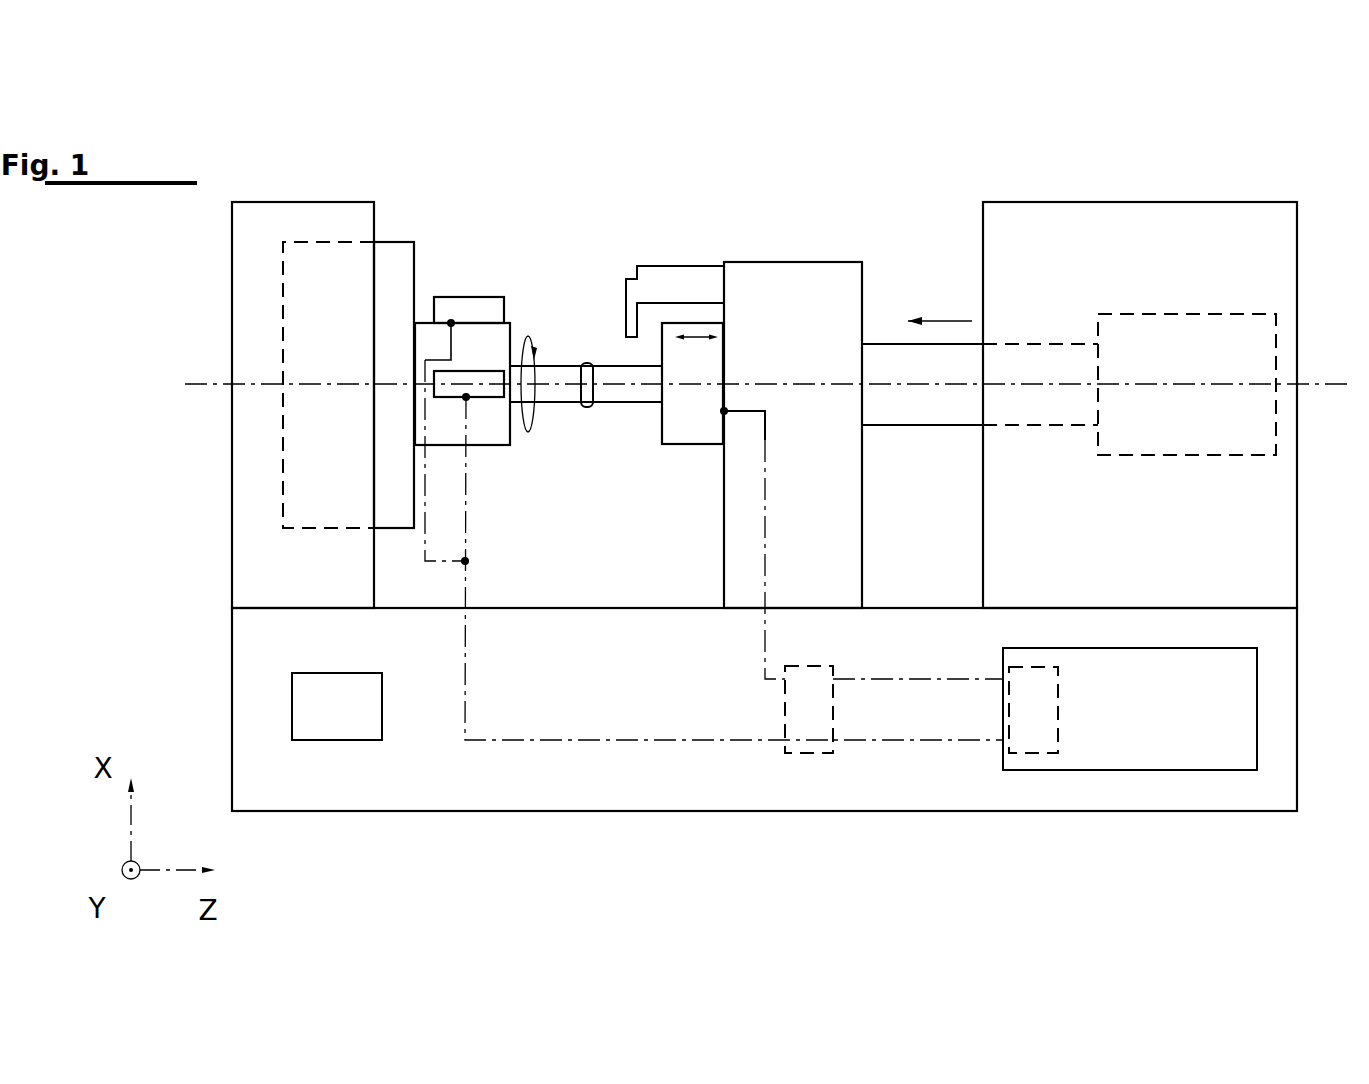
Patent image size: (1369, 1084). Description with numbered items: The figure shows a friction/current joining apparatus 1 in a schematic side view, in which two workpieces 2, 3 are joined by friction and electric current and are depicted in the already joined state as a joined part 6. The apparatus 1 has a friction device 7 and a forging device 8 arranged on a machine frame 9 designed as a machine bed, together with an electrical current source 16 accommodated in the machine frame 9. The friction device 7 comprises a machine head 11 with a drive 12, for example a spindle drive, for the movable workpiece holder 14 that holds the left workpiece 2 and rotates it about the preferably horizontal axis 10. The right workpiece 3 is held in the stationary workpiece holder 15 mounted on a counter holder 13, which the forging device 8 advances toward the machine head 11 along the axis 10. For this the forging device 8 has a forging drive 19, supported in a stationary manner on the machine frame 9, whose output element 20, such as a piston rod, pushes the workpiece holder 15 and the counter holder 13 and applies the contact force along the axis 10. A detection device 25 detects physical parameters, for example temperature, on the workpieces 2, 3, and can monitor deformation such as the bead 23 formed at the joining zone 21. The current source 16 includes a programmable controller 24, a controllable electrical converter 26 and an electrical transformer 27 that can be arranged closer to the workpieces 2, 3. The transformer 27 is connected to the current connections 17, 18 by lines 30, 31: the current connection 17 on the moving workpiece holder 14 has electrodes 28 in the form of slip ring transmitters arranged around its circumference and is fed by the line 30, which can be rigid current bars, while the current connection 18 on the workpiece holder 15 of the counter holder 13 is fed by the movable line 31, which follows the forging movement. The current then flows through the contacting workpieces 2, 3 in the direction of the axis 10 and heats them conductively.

The friction/current joining apparatus 1 is at (1192, 185).
The workpiece 2 is at (537, 392).
The workpiece 3 is at (632, 402).
The joined part 6 is at (577, 403).
The friction device 7 is at (447, 197).
The forging device 8 is at (968, 245).
The machine frame 9 is at (252, 700).
The axis 10 is at (1023, 383).
The machine head 11 is at (315, 220).
The drive 12 is at (298, 453).
The counter holder 13 is at (770, 273).
The workpiece holder 14 is at (483, 430).
The workpiece holder 15 is at (690, 430).
The electrical current source 16 is at (1130, 752).
The current connection 17 is at (466, 397).
The current connection 18 is at (724, 411).
The forging drive 19 is at (1190, 436).
The output element 20 is at (945, 408).
The joining zone 21 is at (588, 381).
The bead 23 is at (587, 362).
The programmable controller 24 is at (327, 722).
The detection device 25 is at (667, 280).
The electrical converter 26 is at (1030, 745).
The electrical transformer 27 is at (805, 737).
The electrode 28 is at (487, 312).
The line 30 is at (605, 740).
The line 31 is at (904, 679).